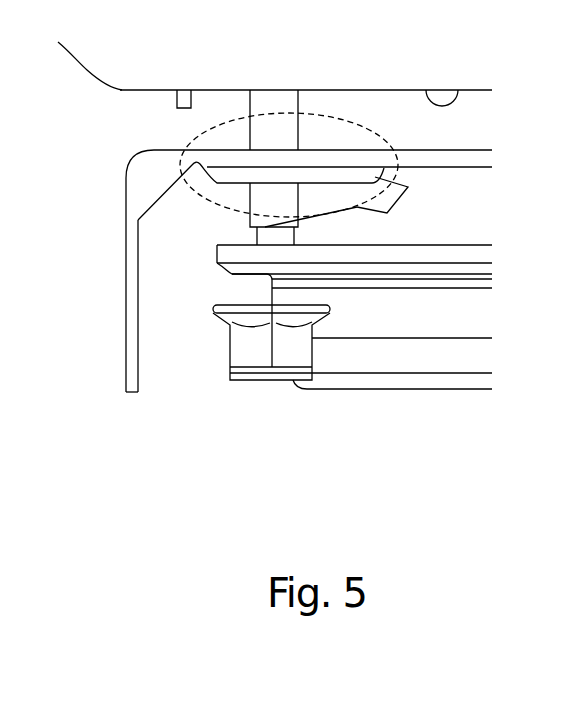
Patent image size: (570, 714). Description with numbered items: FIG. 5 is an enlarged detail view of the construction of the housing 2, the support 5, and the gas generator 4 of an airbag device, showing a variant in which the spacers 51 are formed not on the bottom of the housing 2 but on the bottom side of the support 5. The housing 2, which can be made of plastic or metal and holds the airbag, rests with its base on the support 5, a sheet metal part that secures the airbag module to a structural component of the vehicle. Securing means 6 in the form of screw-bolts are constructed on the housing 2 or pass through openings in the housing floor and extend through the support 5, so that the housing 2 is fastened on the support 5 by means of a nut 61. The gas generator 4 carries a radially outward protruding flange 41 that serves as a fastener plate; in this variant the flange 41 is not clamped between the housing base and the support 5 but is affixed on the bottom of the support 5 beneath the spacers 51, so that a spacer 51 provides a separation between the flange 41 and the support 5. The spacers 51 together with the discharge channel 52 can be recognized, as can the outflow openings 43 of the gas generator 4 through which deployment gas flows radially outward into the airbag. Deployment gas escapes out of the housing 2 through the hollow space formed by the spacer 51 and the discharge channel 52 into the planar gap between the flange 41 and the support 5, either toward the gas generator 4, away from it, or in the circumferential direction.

The housing 2 is at (110, 63).
The securing means 6 is at (270, 108).
The outflow openings 43 is at (440, 100).
The support 5 is at (135, 358).
The spacers 51 is at (238, 177).
The discharge channel 52 is at (272, 223).
The flange 41 is at (227, 257).
The gas generator 4 is at (409, 382).
The nut 61 is at (236, 348).